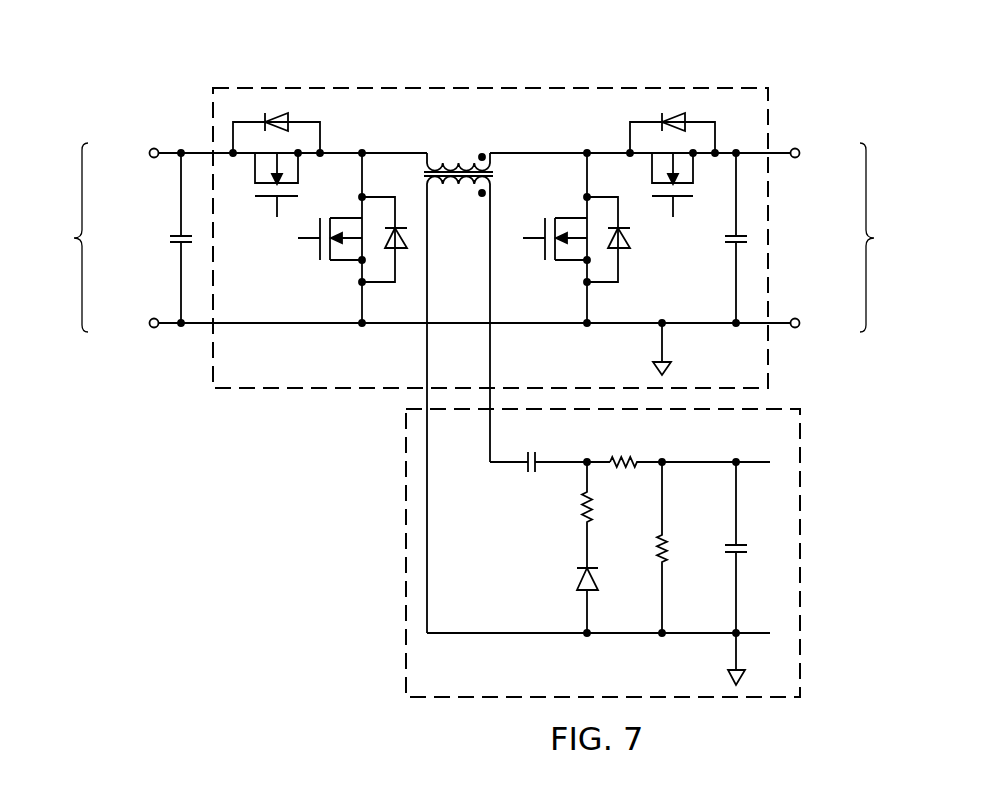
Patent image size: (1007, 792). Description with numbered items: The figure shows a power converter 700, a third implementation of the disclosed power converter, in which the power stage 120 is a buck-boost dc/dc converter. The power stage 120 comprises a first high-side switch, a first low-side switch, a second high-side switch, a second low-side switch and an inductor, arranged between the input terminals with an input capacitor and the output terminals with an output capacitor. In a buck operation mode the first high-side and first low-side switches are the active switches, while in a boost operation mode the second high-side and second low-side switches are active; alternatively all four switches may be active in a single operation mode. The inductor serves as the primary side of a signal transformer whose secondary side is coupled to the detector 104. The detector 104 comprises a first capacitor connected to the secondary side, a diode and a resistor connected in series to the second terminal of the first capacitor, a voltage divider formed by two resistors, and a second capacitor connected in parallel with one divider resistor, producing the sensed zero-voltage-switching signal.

The power converter 700 is at (243, 528).
The power stage 120 is at (477, 86).
The detector 104 is at (403, 568).